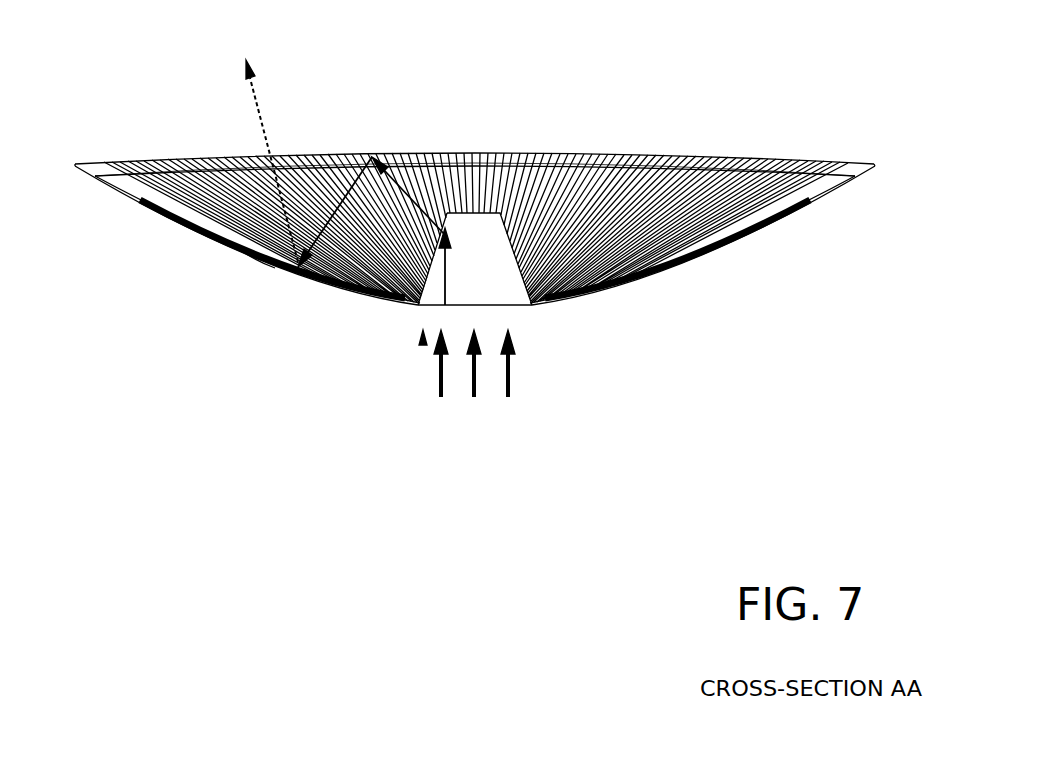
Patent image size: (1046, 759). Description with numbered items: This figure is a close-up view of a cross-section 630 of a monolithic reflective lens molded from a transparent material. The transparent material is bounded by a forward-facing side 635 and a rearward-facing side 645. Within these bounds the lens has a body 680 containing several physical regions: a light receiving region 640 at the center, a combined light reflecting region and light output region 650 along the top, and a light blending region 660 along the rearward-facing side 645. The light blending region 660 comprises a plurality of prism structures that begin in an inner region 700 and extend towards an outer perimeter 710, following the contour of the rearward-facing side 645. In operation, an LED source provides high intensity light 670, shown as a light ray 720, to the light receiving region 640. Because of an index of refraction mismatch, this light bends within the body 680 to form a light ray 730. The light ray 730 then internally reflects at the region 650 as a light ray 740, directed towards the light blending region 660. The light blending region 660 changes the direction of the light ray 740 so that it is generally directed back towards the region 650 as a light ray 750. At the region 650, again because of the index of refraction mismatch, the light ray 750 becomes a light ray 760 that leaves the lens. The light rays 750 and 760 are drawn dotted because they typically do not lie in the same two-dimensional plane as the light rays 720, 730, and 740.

The cross-section 630 is at (860, 140).
The forward-facing side 635 is at (712, 154).
The light receiving region 640 is at (421, 347).
The rearward-facing side 645 is at (708, 256).
The combined light reflecting region and light output region 650 is at (490, 140).
The light blending region 660 is at (221, 263).
The high intensity light 670 is at (567, 445).
The body 680 is at (237, 158).
The inner region 700 is at (538, 304).
The outer perimeter 710 is at (873, 175).
The light ray 720 is at (437, 308).
The light ray 730 is at (378, 158).
The light ray 740 is at (322, 283).
The light ray 750 is at (245, 256).
The light ray 760 is at (263, 97).